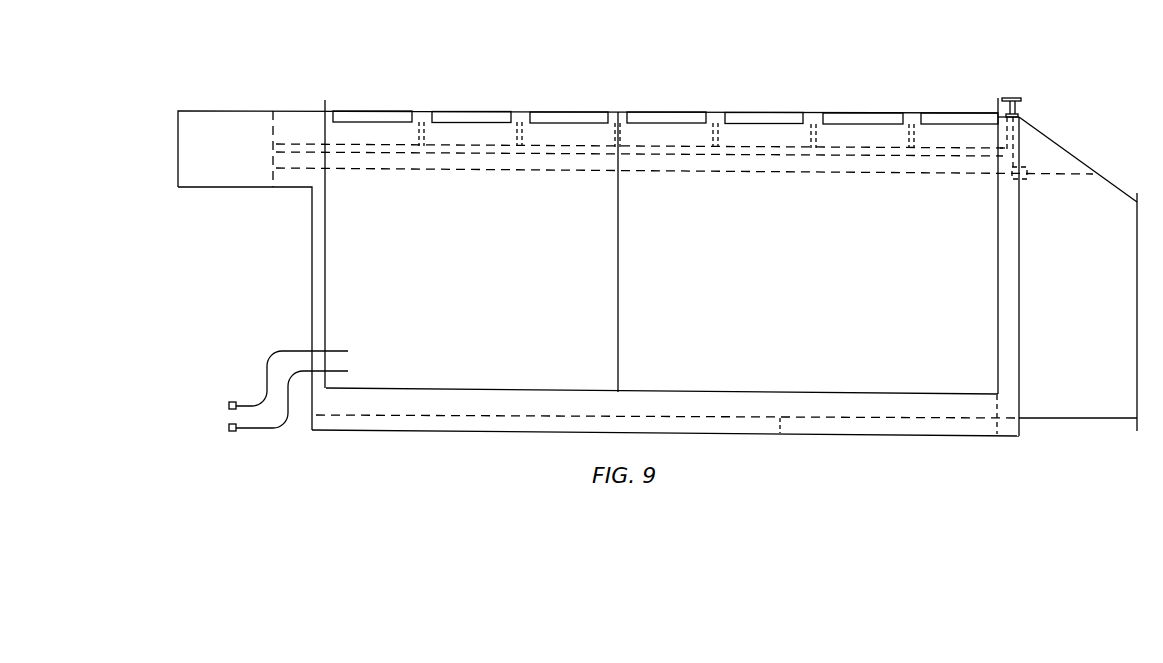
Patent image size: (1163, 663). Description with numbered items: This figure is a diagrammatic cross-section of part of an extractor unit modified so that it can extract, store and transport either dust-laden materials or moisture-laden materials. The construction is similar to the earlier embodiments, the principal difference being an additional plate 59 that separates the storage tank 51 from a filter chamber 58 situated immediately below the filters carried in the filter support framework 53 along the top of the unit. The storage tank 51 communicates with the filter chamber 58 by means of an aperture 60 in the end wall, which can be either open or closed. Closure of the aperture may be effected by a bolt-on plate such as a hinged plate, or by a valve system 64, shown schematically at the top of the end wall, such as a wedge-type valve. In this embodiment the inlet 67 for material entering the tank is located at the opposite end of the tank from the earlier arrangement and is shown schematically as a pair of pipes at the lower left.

The storage tank 51 is at (354, 302).
The filter support framework 53 is at (457, 152).
The filter chamber 58 is at (297, 160).
The additional plate 59 is at (363, 168).
The aperture 60 is at (1020, 190).
The valve system 64 is at (1019, 117).
The inlet 67 is at (268, 428).